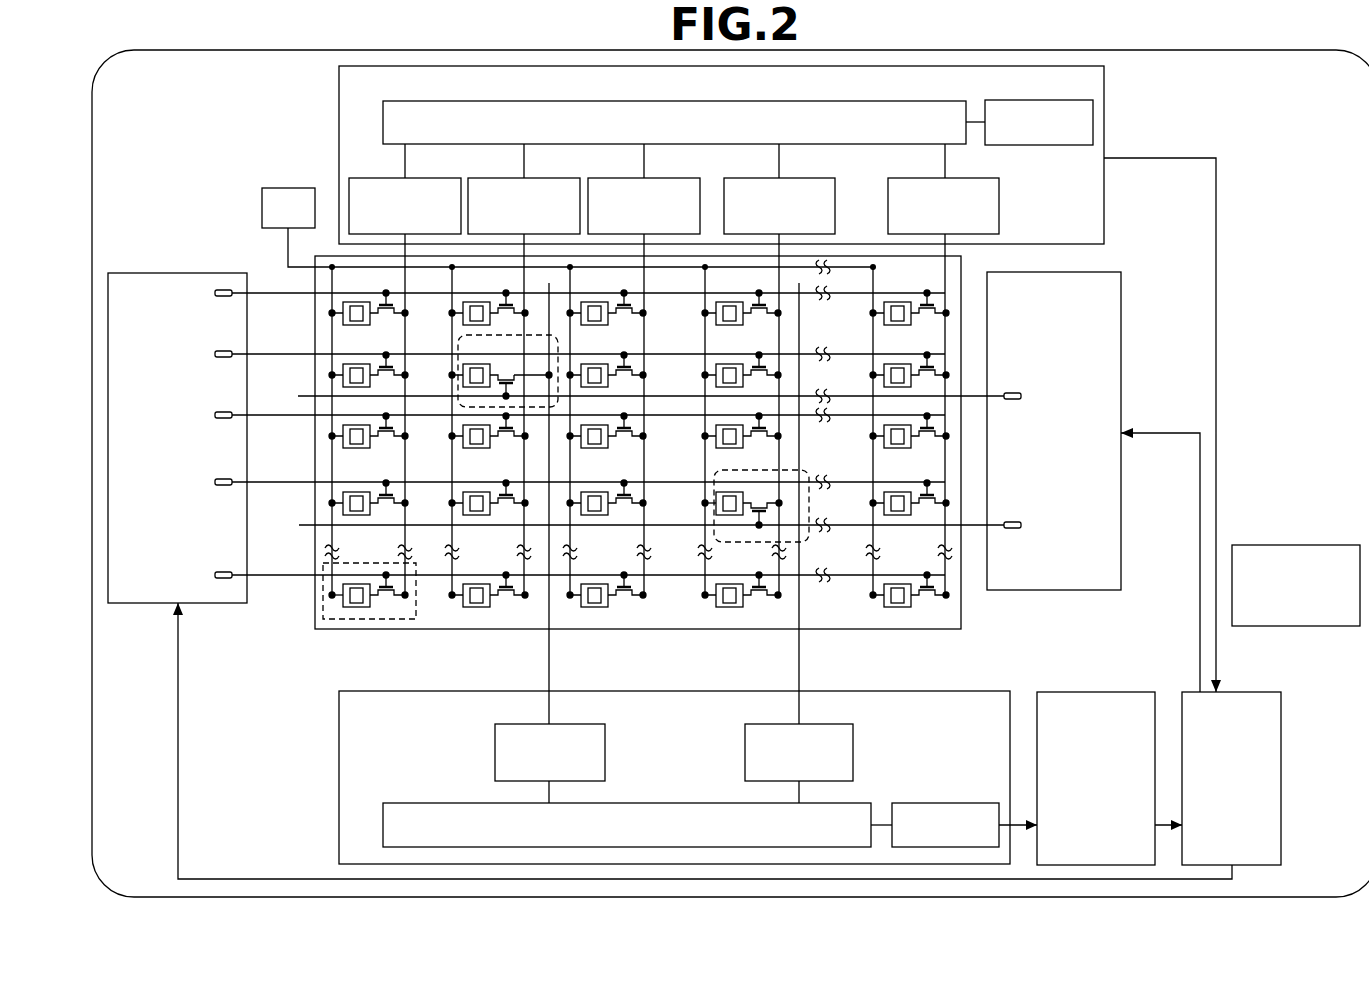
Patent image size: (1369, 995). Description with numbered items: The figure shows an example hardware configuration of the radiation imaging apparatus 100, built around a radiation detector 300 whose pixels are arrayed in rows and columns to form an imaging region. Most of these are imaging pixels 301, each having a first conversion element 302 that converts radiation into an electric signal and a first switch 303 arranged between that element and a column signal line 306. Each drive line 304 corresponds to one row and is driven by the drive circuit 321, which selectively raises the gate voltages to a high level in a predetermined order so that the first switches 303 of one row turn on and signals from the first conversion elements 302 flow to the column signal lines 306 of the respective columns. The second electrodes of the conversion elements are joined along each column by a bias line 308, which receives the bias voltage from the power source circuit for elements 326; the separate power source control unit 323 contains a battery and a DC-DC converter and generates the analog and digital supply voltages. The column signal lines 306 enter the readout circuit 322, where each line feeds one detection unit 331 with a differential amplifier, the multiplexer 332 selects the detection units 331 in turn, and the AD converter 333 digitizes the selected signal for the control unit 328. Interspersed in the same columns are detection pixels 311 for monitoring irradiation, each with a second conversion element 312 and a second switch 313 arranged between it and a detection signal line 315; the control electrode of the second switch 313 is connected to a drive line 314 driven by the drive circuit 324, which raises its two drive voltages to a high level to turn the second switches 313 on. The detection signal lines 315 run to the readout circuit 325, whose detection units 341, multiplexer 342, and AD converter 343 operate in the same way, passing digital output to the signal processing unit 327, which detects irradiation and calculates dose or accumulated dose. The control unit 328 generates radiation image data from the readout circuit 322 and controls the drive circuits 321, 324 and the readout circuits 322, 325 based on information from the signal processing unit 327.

The radiation imaging apparatus 100 is at (1185, 50).
The radiation detector 300 is at (890, 630).
The imaging pixel 301 is at (410, 625).
The first conversion element 302 is at (355, 612).
The first switch 303 is at (388, 600).
The drive line 304 is at (283, 295).
The column signal line 306 is at (945, 582).
The bias line 308 is at (323, 587).
The detection pixel 311 is at (657, 473).
The second conversion element 312 is at (730, 490).
The second switch 313 is at (762, 502).
The drive line 314 is at (738, 522).
The detection signal line 315 is at (799, 657).
The drive circuit 321 is at (153, 273).
The readout circuit 322 is at (339, 85).
The power source control unit 323 is at (1298, 545).
The drive circuit 324 is at (1121, 335).
The readout circuit 325 is at (339, 707).
The power source circuit for elements 326 is at (288, 188).
The signal processing unit 327 is at (1093, 692).
The control unit 328 is at (1253, 692).
The detection unit 331 is at (413, 178).
The multiplexer 332 is at (655, 101).
The AD converter 333 is at (1010, 100).
The detection unit 341 is at (560, 724).
The multiplexer 342 is at (680, 803).
The AD converter 343 is at (945, 803).